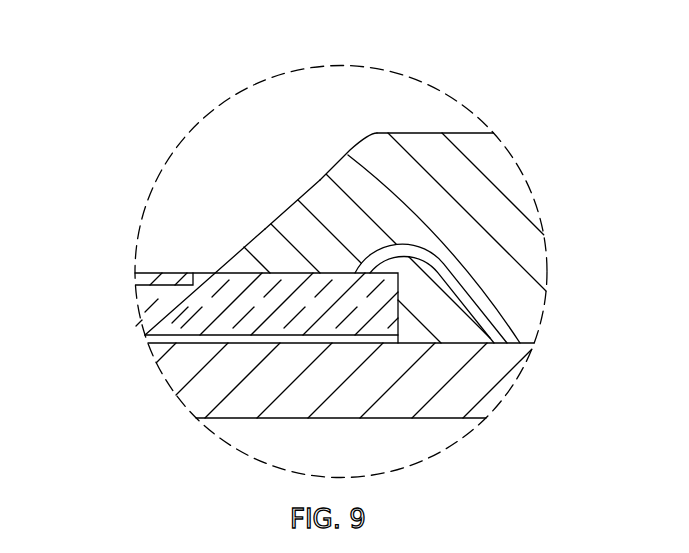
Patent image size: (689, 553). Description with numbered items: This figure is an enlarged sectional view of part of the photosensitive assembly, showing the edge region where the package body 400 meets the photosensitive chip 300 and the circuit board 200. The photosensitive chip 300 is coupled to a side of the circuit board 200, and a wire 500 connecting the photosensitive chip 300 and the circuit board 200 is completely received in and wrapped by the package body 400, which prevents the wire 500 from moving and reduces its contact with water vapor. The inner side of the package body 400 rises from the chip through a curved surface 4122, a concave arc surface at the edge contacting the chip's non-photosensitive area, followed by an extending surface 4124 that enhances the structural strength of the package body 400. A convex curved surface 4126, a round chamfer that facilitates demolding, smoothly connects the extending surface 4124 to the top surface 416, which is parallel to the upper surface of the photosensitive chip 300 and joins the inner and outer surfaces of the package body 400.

The curved surface 4122 is at (257, 243).
The extending surface 4124 is at (308, 190).
The convex curved surface 4126 is at (350, 152).
The top surface 416 is at (473, 133).
The package body 400 is at (502, 182).
The wire 500 is at (484, 308).
The photosensitive chip 300 is at (170, 298).
The circuit board 200 is at (230, 360).